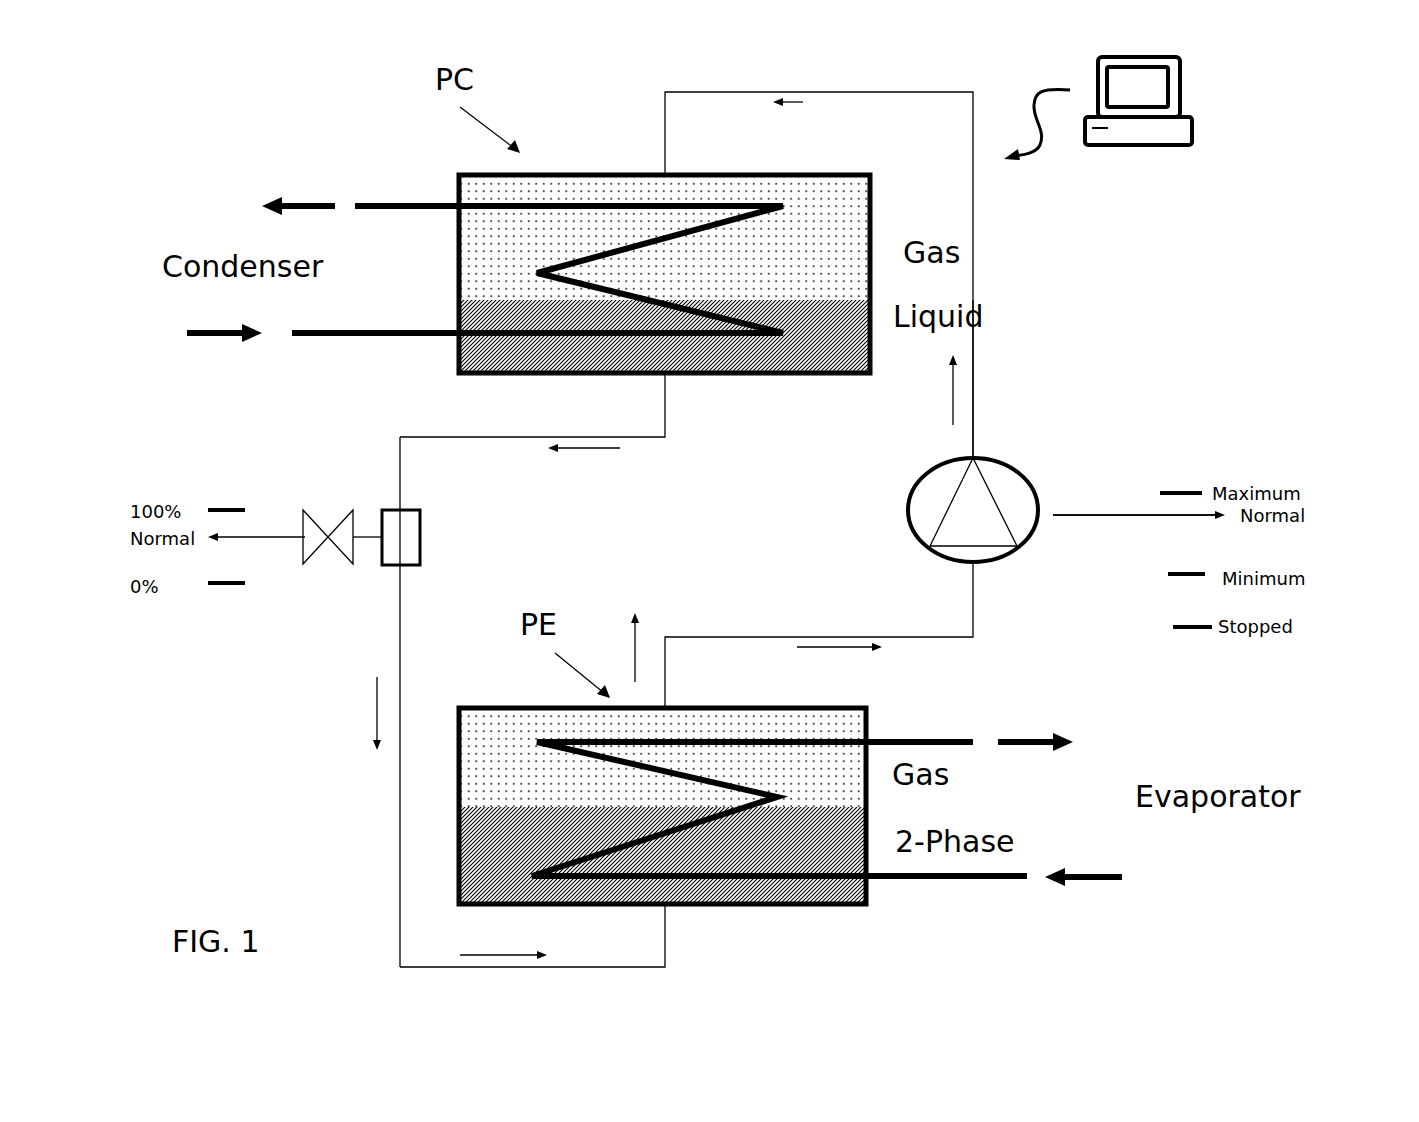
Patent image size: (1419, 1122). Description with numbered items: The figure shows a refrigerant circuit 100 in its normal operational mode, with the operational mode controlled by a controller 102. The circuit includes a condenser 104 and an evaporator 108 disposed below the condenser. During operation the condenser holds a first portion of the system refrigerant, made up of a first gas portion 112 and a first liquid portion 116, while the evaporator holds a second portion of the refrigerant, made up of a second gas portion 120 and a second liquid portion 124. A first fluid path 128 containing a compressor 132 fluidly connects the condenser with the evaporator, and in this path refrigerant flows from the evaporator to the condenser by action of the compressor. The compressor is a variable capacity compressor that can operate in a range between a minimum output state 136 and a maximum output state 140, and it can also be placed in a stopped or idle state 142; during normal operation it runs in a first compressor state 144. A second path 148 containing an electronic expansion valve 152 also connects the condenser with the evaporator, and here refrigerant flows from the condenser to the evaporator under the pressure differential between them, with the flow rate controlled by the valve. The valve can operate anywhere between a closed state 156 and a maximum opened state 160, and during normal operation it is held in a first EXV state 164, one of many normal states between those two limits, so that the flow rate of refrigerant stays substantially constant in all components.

The refrigerant circuit 100 is at (319, 157).
The controller 102 is at (1193, 102).
The condenser 104 is at (823, 261).
The evaporator 108 is at (893, 822).
The first gas portion 112 is at (832, 230).
The first liquid portion 116 is at (828, 332).
The second gas portion 120 is at (842, 718).
The second liquid portion 124 is at (840, 827).
The first fluid path 128 is at (973, 372).
The compressor 132 is at (1020, 472).
The minimum output state 136 is at (1165, 585).
The maximum output state 140 is at (1173, 485).
The stopped or idle state 142 is at (1193, 630).
The first compressor state 144 is at (1250, 526).
The second path 148 is at (398, 777).
The electronic expansion valve 152 is at (340, 573).
The closed state 156 is at (240, 502).
The maximum opened state 160 is at (233, 587).
The first EXV state 164 is at (287, 533).